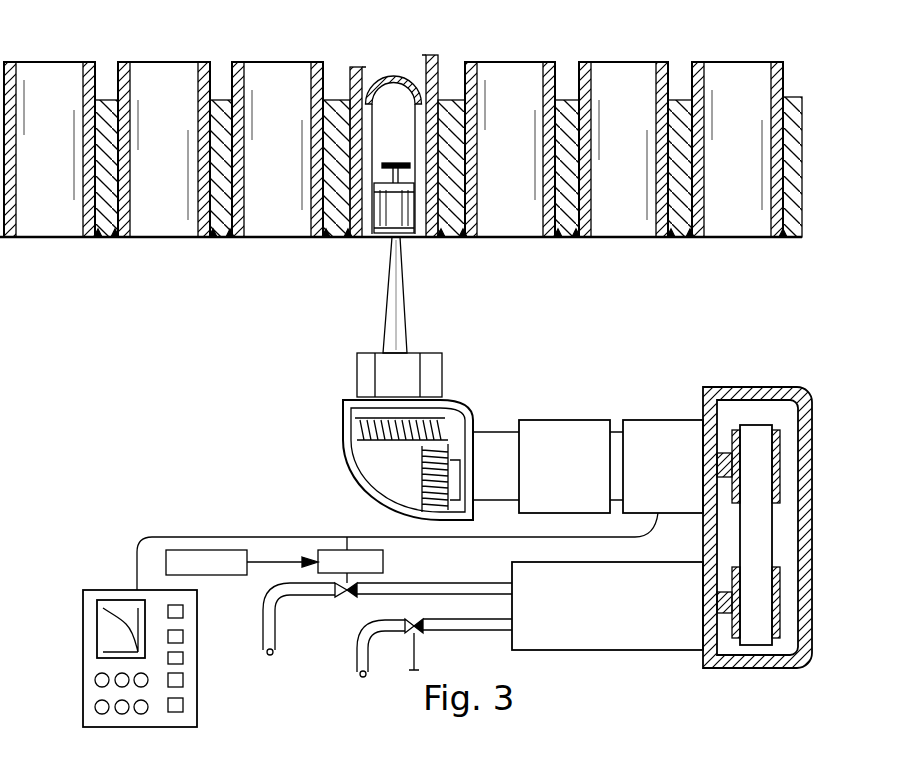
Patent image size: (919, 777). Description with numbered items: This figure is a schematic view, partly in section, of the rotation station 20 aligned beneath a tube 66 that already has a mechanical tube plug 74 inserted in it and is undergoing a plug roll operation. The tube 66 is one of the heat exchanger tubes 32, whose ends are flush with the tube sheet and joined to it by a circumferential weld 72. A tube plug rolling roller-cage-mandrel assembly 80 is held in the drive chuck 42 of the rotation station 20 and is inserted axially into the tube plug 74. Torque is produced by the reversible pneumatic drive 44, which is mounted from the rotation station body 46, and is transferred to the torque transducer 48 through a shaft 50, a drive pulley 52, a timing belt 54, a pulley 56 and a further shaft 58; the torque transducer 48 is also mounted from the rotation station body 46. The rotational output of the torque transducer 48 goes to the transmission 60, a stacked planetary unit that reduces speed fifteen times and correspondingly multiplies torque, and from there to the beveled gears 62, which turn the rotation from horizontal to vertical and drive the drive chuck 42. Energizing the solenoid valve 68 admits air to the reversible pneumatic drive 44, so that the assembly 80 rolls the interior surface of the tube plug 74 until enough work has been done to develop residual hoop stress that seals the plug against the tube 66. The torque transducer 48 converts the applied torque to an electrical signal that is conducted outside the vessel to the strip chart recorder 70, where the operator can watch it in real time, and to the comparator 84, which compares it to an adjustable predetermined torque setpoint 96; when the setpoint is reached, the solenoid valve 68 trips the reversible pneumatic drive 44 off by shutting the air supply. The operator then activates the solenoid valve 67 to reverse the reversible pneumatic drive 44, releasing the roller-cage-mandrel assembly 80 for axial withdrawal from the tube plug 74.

The rotation station 20 is at (812, 655).
The heat exchanger tubes 32 is at (210, 62).
The drive chuck 42 is at (442, 370).
The reversible pneumatic drive 44 is at (683, 650).
The rotation station body 46 is at (790, 387).
The torque transducer 48 is at (636, 420).
The shaft 50 is at (723, 617).
The drive pulley 52 is at (780, 590).
The timing belt 54 is at (772, 538).
The pulley 56 is at (780, 468).
The shaft 58 is at (723, 453).
The transmission 60 is at (560, 420).
The beveled gears 62 is at (456, 406).
The tube 66 is at (438, 56).
The solenoid valve 67 is at (420, 633).
The solenoid valve 68 is at (347, 597).
The strip chart recorder 70 is at (103, 590).
The circumferential weld 72 is at (349, 238).
The tube plug 74 is at (389, 74).
The tube plug rolling roller-cage-mandrel assembly 80 is at (401, 277).
The comparator 84 is at (383, 562).
The set point unit 96 is at (218, 575).